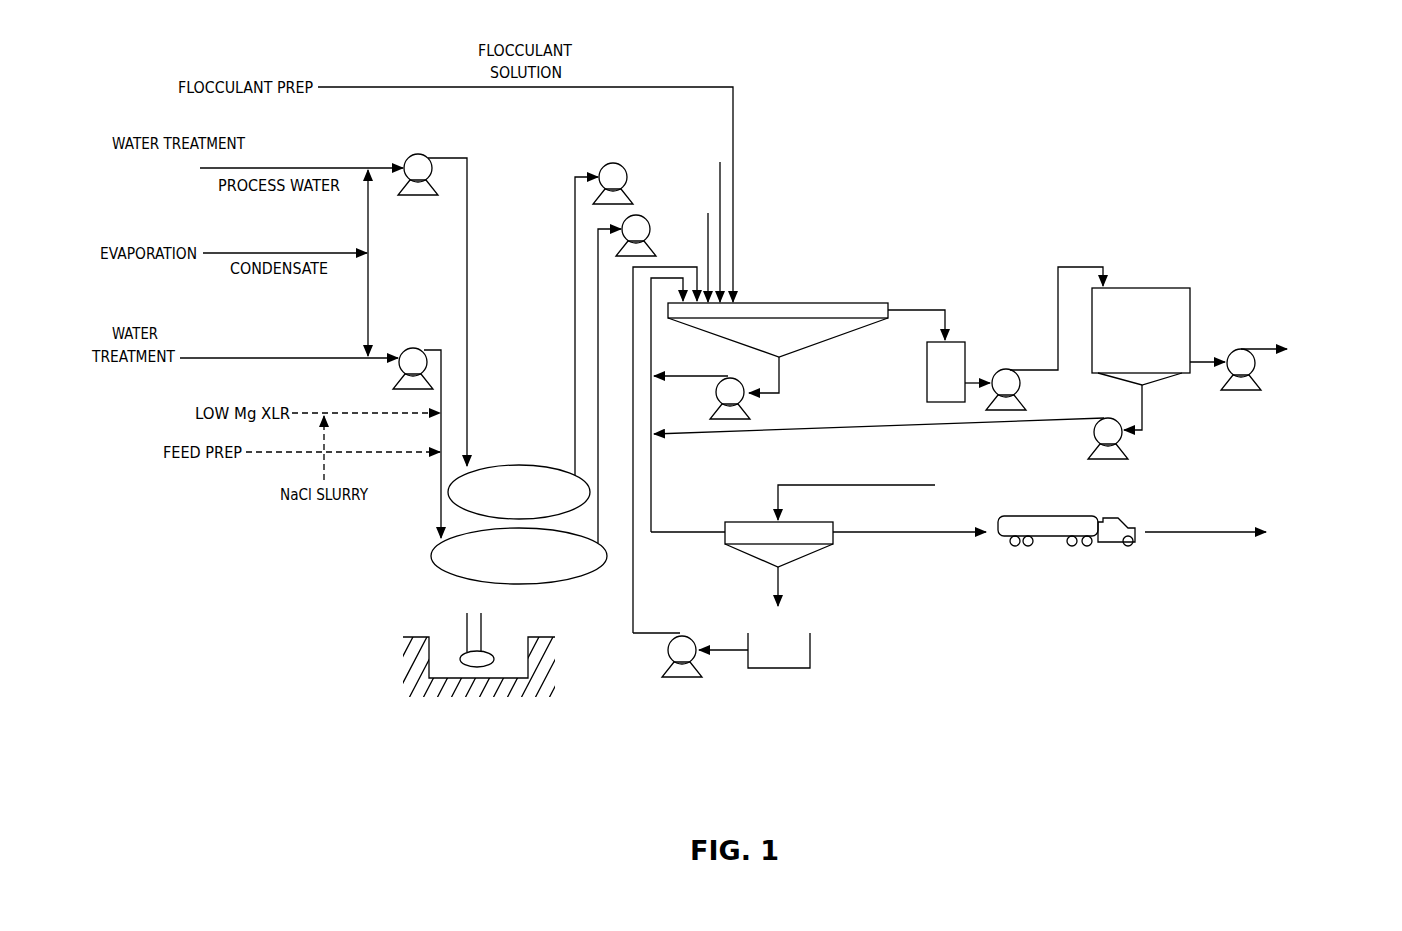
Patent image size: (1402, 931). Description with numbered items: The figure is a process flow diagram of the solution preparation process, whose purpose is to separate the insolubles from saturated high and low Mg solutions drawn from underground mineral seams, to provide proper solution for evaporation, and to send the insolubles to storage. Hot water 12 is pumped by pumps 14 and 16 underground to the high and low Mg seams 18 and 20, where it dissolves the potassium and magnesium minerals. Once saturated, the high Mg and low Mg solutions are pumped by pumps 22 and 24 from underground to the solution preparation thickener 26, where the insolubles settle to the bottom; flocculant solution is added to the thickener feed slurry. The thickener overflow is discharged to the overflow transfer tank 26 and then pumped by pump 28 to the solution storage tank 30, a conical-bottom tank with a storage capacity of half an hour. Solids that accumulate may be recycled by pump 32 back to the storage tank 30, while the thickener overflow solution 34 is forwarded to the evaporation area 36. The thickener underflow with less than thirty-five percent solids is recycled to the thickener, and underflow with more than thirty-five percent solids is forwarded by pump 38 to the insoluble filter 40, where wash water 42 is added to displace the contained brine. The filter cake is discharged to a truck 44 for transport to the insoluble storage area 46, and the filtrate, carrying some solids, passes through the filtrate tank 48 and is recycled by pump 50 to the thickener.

The hot water 12 is at (207, 370).
The pump 14 is at (408, 160).
The pump 16 is at (418, 362).
The underground seam 18 is at (520, 470).
The underground seam 20 is at (570, 568).
The pump 22 is at (618, 174).
The pump 24 is at (640, 226).
The solution preparation thickener 26 is at (838, 303).
The pump 28 is at (1010, 385).
The solution preparation thickener solution storage tank 30 is at (1143, 289).
The pump 32 is at (1115, 438).
The solution preparation thickener overflow solution 34 is at (1265, 352).
The evaporation area 36 is at (1252, 365).
The pump 38 is at (727, 390).
The insoluble filter 40 is at (805, 533).
The wash water 42 is at (903, 485).
The truck 44 is at (1048, 527).
The insoluble storage area 46 is at (1203, 535).
The filtrate tank 48 is at (812, 650).
The pump 50 is at (675, 650).